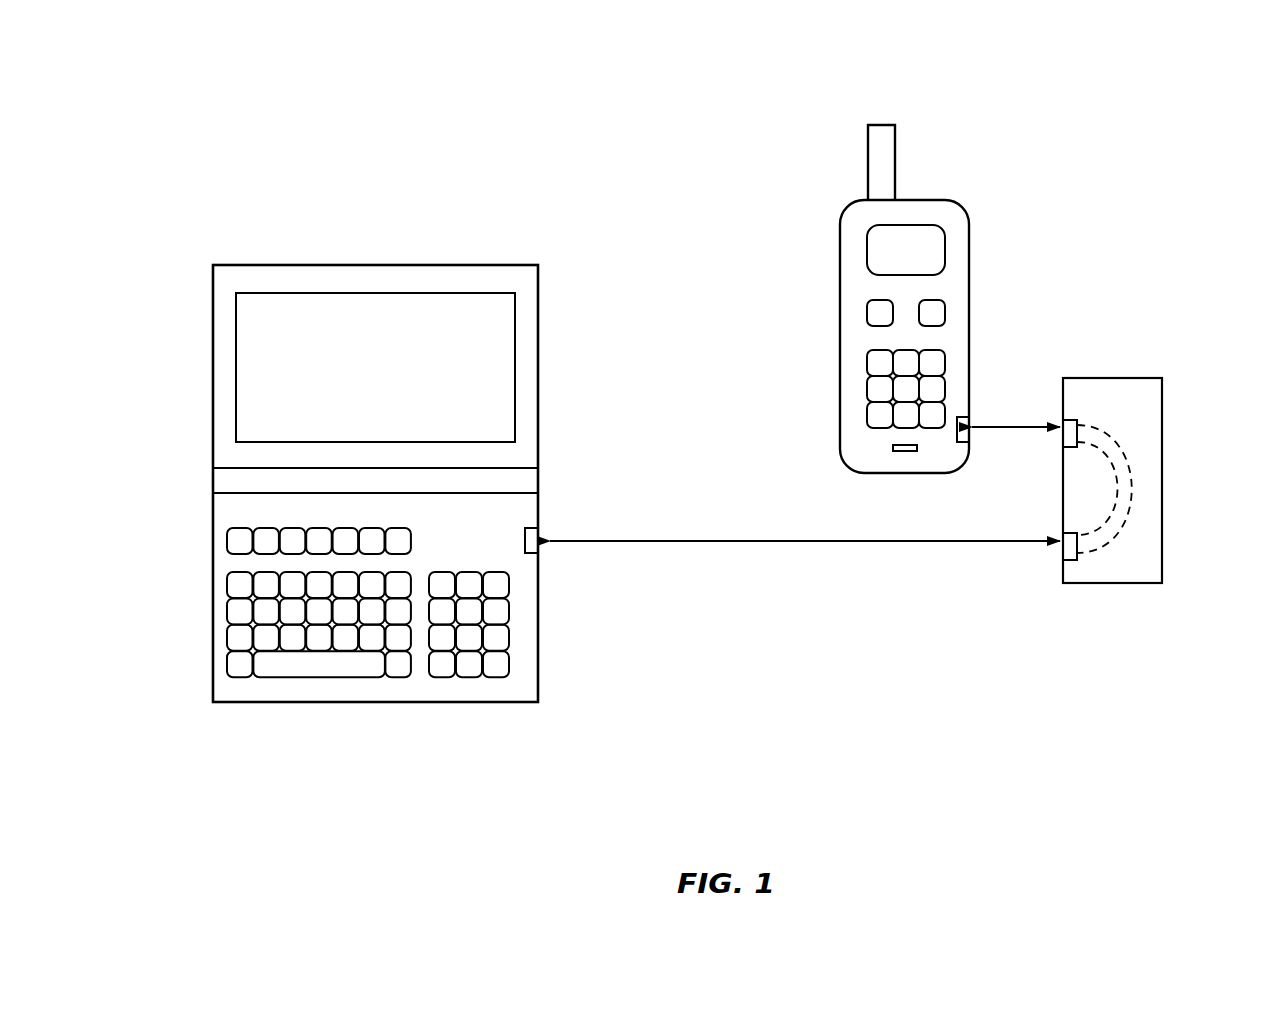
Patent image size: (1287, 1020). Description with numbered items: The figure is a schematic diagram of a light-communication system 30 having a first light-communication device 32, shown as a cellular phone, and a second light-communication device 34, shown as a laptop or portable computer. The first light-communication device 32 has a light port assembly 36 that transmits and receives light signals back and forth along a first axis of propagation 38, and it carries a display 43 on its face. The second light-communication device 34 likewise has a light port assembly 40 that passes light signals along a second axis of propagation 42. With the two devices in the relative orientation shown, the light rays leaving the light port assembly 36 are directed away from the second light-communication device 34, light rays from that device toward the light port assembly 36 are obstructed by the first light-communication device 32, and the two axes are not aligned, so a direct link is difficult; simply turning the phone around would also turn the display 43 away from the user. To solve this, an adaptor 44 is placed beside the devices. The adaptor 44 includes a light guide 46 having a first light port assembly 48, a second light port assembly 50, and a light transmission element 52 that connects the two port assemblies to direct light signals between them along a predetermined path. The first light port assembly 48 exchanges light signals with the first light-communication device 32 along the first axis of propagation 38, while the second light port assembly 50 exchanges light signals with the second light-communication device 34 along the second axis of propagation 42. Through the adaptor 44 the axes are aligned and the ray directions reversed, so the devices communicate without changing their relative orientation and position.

The light-communication system 30 is at (614, 158).
The first light-communication device 32 is at (958, 276).
The second light-communication device 34 is at (528, 510).
The light port assembly 36 is at (970, 428).
The first axis of propagation 38 is at (1008, 432).
The light port assembly 40 is at (538, 545).
The second axis of propagation 42 is at (768, 543).
The display 43 is at (931, 243).
The adaptor 44 is at (1150, 552).
The light guide 46 is at (1137, 455).
The first light port assembly 48 is at (1060, 425).
The second light port assembly 50 is at (1062, 553).
The light transmission element 52 is at (1135, 490).